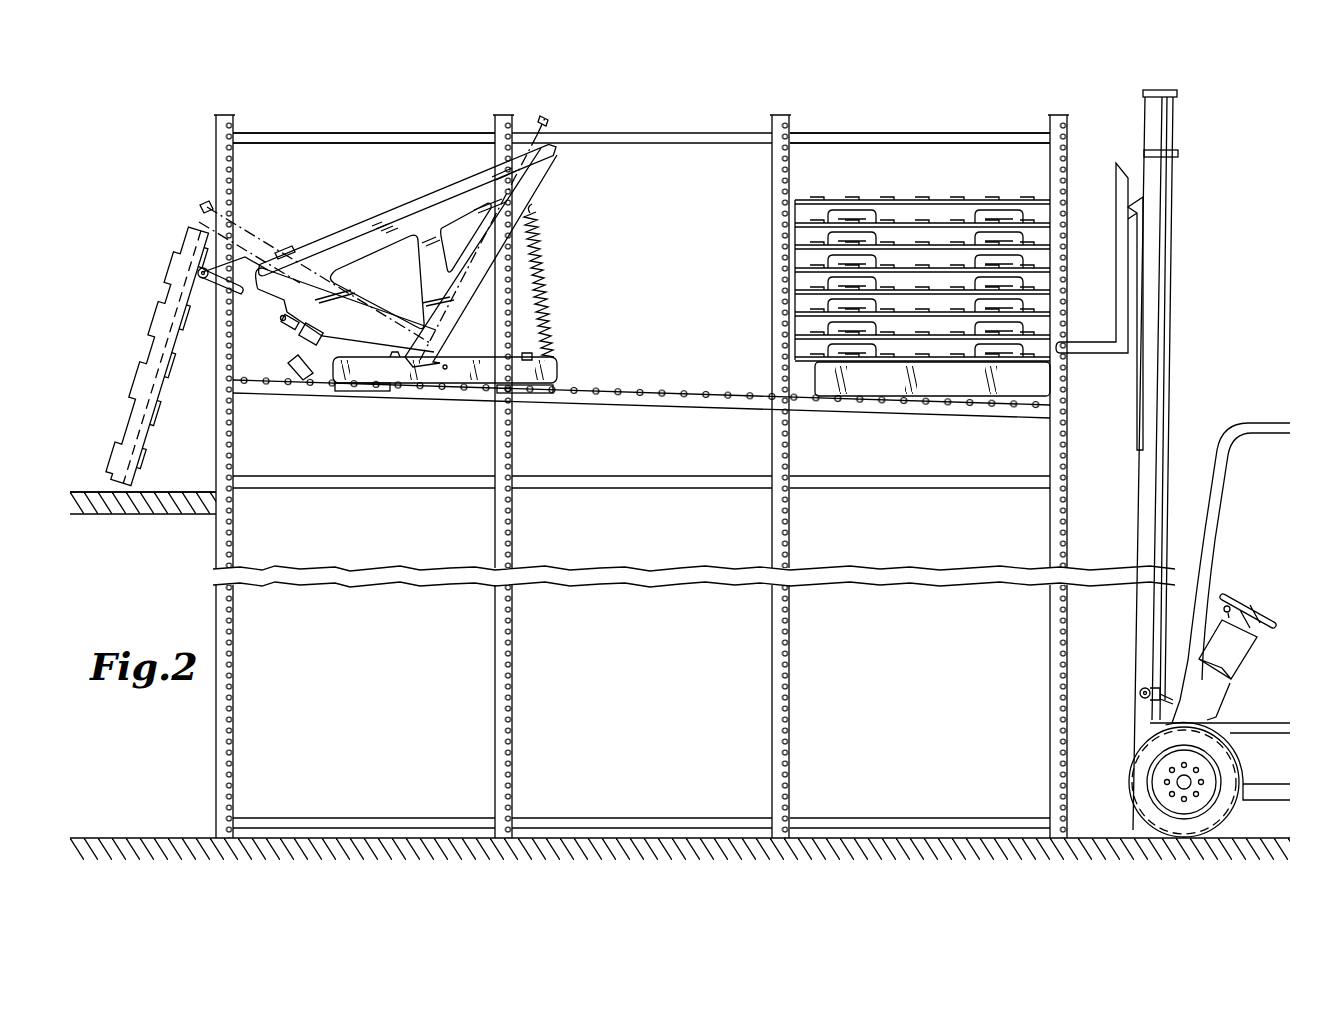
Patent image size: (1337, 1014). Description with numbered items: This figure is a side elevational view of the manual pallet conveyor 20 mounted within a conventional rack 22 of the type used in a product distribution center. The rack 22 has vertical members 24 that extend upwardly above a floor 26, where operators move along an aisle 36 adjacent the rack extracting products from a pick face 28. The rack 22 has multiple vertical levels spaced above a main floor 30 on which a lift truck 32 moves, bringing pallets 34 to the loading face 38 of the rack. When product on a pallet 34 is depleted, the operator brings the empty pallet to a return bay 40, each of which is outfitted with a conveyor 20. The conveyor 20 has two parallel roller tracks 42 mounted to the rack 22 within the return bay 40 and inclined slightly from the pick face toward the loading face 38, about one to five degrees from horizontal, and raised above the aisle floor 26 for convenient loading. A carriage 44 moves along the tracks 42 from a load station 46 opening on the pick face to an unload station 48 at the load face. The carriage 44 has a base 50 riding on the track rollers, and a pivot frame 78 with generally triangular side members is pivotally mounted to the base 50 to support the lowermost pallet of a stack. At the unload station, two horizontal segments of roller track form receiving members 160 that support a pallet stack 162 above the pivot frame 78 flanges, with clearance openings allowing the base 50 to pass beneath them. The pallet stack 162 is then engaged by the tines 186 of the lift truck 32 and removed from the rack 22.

The manual pallet conveyor 20 is at (617, 220).
The rack 22 is at (858, 131).
The vertical members 24 is at (771, 274).
The floor 26 is at (176, 491).
The pick face 28 is at (214, 426).
The main floor 30 is at (1092, 837).
The lift truck 32 is at (1237, 417).
The pallet 34 is at (146, 360).
The aisle 36 is at (86, 491).
The loading face 38 is at (1071, 150).
The return bay 40 is at (215, 364).
The roller tracks 42 is at (650, 388).
The carriage 44 is at (472, 357).
The load station 46 is at (266, 133).
The unload station 48 is at (1016, 132).
The base 50 is at (374, 391).
The pivot frame 78 is at (381, 222).
The receiving members 160 is at (832, 361).
The pallet stack 162 is at (928, 198).
The tines 186 is at (1080, 341).